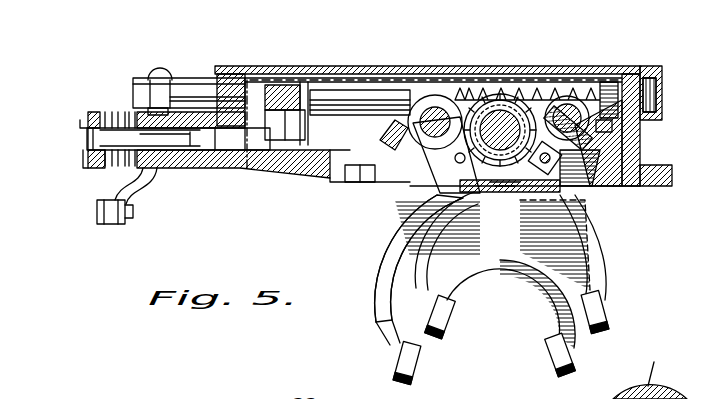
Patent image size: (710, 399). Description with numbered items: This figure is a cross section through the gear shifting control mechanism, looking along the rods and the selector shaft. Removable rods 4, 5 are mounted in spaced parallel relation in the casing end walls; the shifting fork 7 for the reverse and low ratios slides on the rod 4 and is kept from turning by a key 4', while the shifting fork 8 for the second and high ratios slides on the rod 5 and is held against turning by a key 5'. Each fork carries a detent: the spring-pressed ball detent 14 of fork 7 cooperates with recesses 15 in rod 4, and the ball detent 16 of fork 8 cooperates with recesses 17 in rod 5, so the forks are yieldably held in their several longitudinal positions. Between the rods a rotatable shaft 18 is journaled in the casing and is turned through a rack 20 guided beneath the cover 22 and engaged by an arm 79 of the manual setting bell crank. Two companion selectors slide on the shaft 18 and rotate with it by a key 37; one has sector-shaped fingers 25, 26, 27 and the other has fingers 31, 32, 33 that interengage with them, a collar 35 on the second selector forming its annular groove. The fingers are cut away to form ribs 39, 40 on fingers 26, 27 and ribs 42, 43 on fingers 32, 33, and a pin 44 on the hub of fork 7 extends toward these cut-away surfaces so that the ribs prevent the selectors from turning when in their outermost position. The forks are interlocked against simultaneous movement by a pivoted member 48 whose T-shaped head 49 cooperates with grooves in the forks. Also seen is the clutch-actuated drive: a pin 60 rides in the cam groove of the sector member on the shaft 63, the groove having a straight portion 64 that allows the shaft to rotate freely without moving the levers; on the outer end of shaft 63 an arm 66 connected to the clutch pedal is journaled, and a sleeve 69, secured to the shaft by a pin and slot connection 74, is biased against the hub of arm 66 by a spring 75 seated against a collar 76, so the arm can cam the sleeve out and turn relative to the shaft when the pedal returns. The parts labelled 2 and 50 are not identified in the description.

The base flange 2 is at (672, 174).
The rod 4 is at (667, 93).
The key 4' is at (618, 74).
The rod 5 is at (360, 117).
The key 5' is at (407, 83).
The shifting fork 7 is at (586, 206).
The shifting fork 8 is at (410, 184).
The spring-pressed ball detent 14 is at (607, 150).
The recesses 15 is at (656, 112).
The spring-pressed ball detent 16 is at (385, 142).
The recesses 17 is at (428, 165).
The rotatable shaft 18 is at (460, 192).
The rack 20 is at (197, 80).
The cover 22 is at (267, 66).
The sector-shaped finger 25 is at (458, 98).
The sector-shaped finger 26 is at (508, 98).
The sector-shaped finger 27 is at (597, 288).
The sector-shaped finger 31 is at (494, 94).
The sector-shaped finger 32 is at (500, 192).
The sector-shaped finger 33 is at (565, 94).
The collar 35 is at (686, 392).
The key 37 is at (482, 96).
The rib 39 is at (562, 96).
The rib 40 is at (522, 192).
The rib 42 is at (462, 200).
The rib 43 is at (580, 106).
The pin 44 is at (560, 174).
The pivoted member 48 is at (495, 192).
The T-shaped head 49 is at (548, 222).
The housing 50 is at (322, 178).
The pin 60 is at (312, 74).
The shaft 63 is at (230, 136).
The straight portion 64 is at (308, 127).
The arm 66 is at (136, 205).
The sleeve 69 is at (158, 173).
The pin and slot connection 74 is at (150, 126).
The spring 75 is at (112, 166).
The collar 76 is at (86, 166).
The arm 79 is at (166, 74).